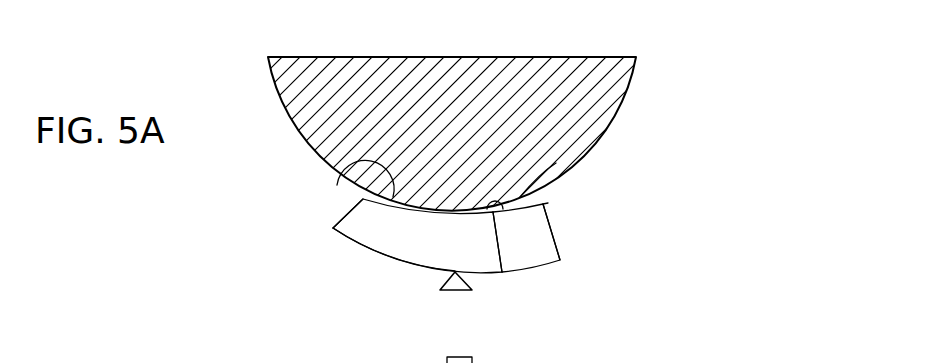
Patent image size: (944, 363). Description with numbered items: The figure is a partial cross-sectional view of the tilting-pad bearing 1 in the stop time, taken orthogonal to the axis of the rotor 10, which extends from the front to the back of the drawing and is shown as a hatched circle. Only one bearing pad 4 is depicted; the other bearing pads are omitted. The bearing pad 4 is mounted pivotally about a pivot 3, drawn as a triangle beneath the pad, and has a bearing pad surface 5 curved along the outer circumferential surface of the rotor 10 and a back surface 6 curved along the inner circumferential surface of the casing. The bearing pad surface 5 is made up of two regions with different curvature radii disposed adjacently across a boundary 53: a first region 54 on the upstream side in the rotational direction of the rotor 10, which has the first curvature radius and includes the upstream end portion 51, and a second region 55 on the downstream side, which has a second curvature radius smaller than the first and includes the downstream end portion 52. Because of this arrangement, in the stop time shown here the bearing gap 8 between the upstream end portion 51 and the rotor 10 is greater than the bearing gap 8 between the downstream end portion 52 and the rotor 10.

The tilting-pad bearing 1 is at (688, 84).
The rotor 10 is at (494, 85).
The pivot 3 is at (461, 287).
The bearing pad 4 is at (541, 263).
The bearing pad surface 5 is at (361, 204).
The back surface 6 is at (387, 256).
The bearing gap 8 is at (543, 199).
The upstream end portion 51 is at (361, 198).
The downstream end portion 52 is at (550, 203).
The boundary 53 is at (501, 273).
The first region 54 is at (330, 163).
The second region 55 is at (556, 163).